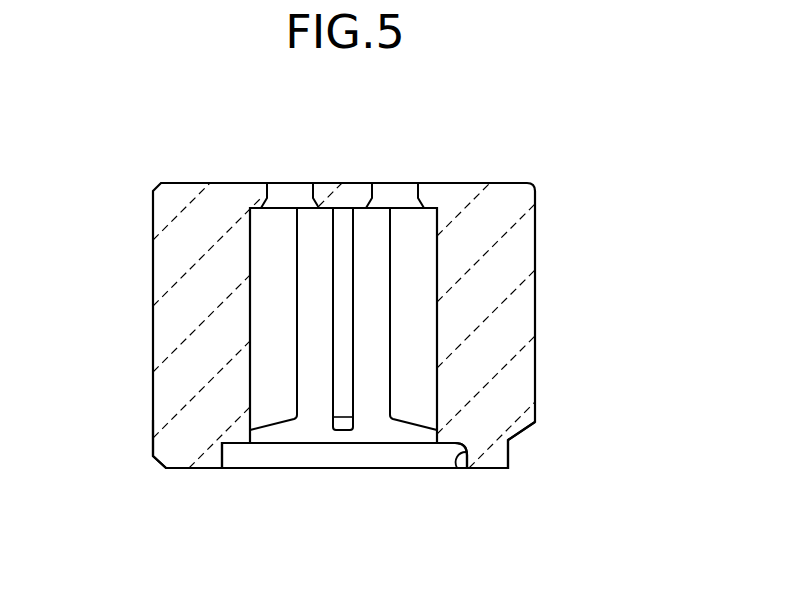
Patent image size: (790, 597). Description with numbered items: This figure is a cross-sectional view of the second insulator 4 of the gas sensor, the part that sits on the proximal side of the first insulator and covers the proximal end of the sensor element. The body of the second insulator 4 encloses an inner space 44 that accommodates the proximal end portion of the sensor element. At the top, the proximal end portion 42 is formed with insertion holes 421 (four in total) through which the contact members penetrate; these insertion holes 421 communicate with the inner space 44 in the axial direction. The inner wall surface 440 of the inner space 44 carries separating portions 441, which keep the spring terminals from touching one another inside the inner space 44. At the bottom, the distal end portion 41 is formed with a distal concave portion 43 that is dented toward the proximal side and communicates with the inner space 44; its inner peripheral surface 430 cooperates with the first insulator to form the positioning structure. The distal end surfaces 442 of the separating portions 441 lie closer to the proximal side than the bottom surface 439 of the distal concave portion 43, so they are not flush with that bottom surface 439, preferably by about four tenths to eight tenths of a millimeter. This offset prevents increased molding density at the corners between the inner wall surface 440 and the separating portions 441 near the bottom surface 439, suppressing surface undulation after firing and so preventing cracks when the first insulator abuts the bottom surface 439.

The second insulator 4 is at (557, 210).
The distal end portion 41 is at (172, 445).
The proximal end portion 42 is at (195, 222).
The distal concave portion 43 is at (458, 468).
The insertion hole 421 is at (287, 193).
The inner space 44 is at (357, 375).
The inner wall surface 440 is at (437, 333).
The separating portion 441 is at (275, 315).
The distal end surface 442 is at (278, 423).
The inner peripheral surface 430 is at (222, 458).
The bottom surface 439 is at (448, 445).